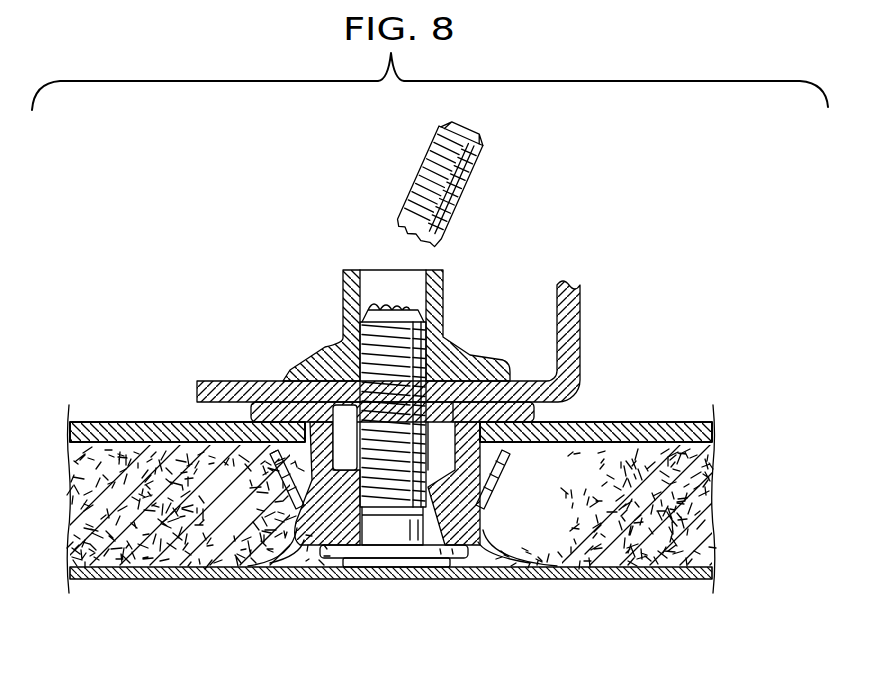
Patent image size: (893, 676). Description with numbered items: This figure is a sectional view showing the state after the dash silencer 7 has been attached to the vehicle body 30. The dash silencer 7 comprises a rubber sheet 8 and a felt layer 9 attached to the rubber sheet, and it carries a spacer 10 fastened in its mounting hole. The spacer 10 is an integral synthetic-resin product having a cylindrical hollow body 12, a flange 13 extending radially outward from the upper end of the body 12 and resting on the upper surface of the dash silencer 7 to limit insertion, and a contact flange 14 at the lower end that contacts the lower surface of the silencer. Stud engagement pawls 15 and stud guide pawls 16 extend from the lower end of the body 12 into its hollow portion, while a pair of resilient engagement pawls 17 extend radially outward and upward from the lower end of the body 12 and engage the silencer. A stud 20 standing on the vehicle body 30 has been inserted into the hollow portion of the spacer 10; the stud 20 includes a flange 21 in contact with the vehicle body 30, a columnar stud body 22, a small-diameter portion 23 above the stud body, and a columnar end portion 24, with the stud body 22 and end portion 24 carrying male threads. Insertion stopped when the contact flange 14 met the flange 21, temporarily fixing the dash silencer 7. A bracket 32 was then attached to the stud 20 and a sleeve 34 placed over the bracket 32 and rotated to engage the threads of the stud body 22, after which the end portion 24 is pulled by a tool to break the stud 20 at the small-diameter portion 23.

The dash silencer 7 is at (724, 470).
The rubber sheet 8 is at (630, 421).
The felt layer 9 is at (718, 508).
The spacer 10 is at (272, 399).
The cylindrical hollow body 12 is at (478, 474).
The flange (first flange) 13 is at (519, 430).
The contact flange (second flange) 14 is at (488, 567).
The stud engagement pawls 15 is at (500, 538).
The stud guide pawls 16 is at (285, 516).
The resilient engagement pawls 17 is at (505, 468).
The stud 20 is at (354, 428).
The flange 21 is at (462, 559).
The columnar stud body 22 is at (437, 450).
The small-diameter portion 23 is at (395, 300).
The columnar end portion 24 is at (422, 163).
The vehicle body 30 is at (611, 579).
The bracket 32 is at (584, 320).
The sleeve 34 is at (449, 290).